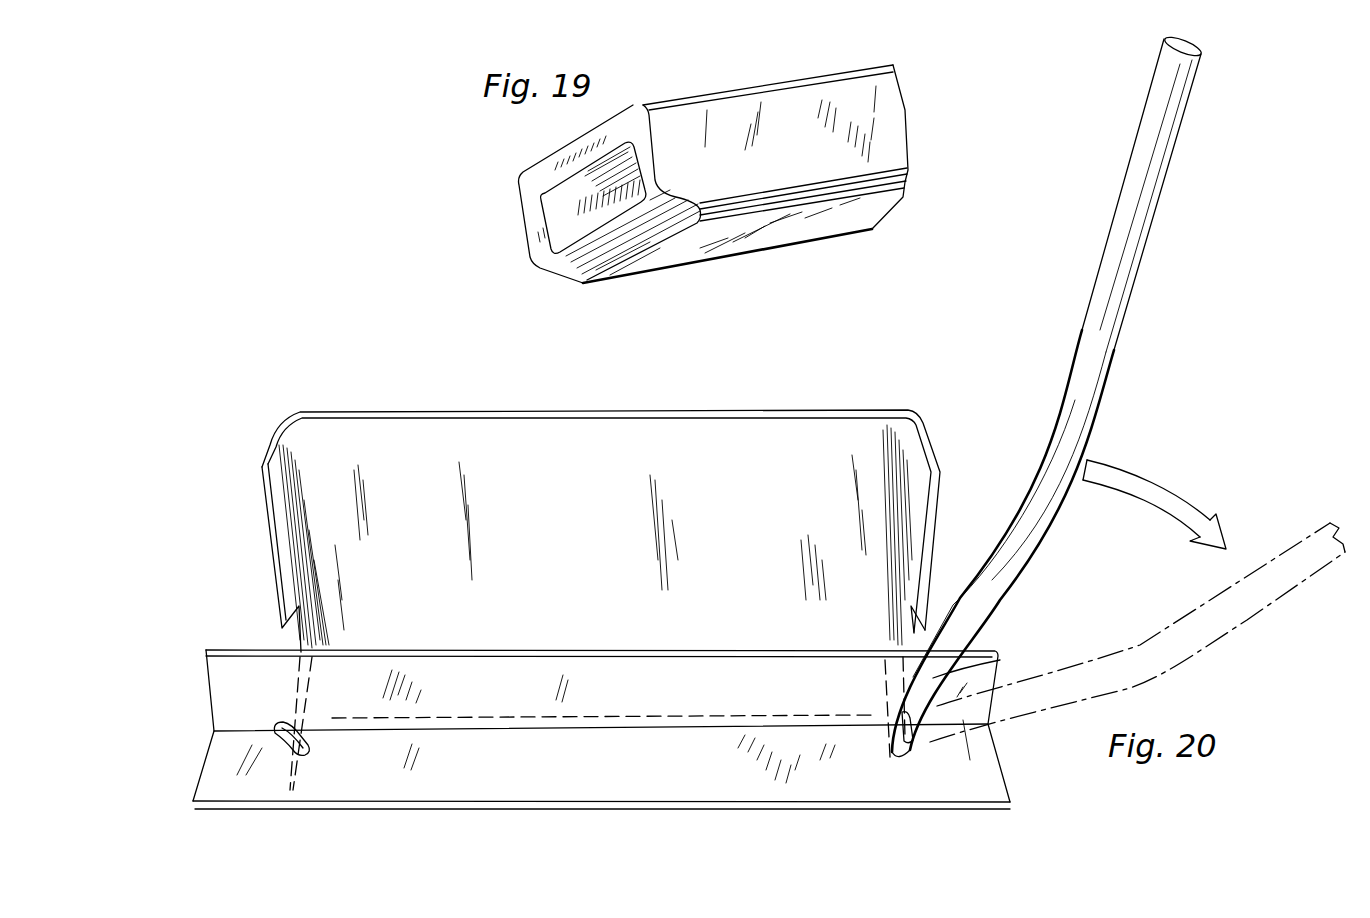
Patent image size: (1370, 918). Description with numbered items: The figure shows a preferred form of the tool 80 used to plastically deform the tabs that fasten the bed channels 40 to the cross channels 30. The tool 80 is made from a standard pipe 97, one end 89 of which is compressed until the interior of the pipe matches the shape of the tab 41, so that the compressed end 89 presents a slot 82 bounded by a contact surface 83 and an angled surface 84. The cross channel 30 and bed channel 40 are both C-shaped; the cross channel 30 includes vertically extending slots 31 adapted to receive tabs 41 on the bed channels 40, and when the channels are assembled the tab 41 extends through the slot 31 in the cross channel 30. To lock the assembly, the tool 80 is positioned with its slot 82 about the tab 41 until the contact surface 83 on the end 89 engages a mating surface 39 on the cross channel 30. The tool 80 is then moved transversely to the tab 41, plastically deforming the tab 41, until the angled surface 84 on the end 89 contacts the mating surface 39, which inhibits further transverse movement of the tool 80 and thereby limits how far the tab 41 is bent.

In FIG. 20, the cross channel 30 is at (825, 782).
In FIG. 20, the slot 31 is at (313, 740).
In FIG. 20, the mating surface 39 is at (977, 748).
In FIG. 20, the bed channel 40 is at (330, 553).
In FIG. 20, the tab 41 is at (278, 720).
In FIG. 19, the tool 80 is at (682, 156).
In FIG. 20, the tool 80 is at (1031, 441).
In FIG. 19, the slot 82 is at (572, 212).
In FIG. 19, the contact surface 83 is at (533, 175).
In FIG. 19, the angled surface 84 is at (637, 230).
In FIG. 20, the angled surface 84 is at (912, 760).
In FIG. 19, the end 89 is at (783, 90).
In FIG. 20, the end 89 is at (1000, 660).
In FIG. 20, the standard pipe 97 is at (1106, 299).